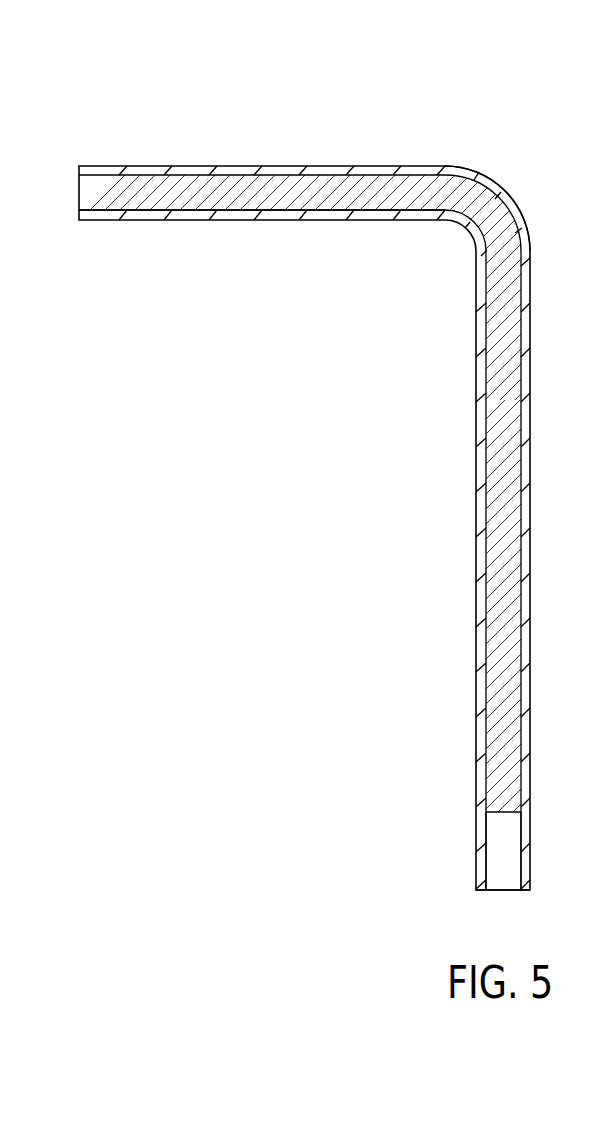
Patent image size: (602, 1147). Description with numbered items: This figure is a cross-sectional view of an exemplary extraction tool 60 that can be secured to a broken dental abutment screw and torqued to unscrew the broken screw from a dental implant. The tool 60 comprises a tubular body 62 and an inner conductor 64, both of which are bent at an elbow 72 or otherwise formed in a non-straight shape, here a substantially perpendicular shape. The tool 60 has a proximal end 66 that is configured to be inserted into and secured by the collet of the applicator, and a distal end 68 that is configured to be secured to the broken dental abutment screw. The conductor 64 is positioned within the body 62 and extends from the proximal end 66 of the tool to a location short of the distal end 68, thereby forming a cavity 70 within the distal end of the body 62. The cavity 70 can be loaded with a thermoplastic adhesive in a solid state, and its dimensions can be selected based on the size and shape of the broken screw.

The extraction tool 60 is at (301, 473).
The tubular body 62 is at (304, 497).
The inner conductor 64 is at (301, 450).
The proximal end 66 is at (261, 238).
The distal end 68 is at (503, 914).
The cavity 70 is at (524, 851).
The elbow 72 is at (487, 193).